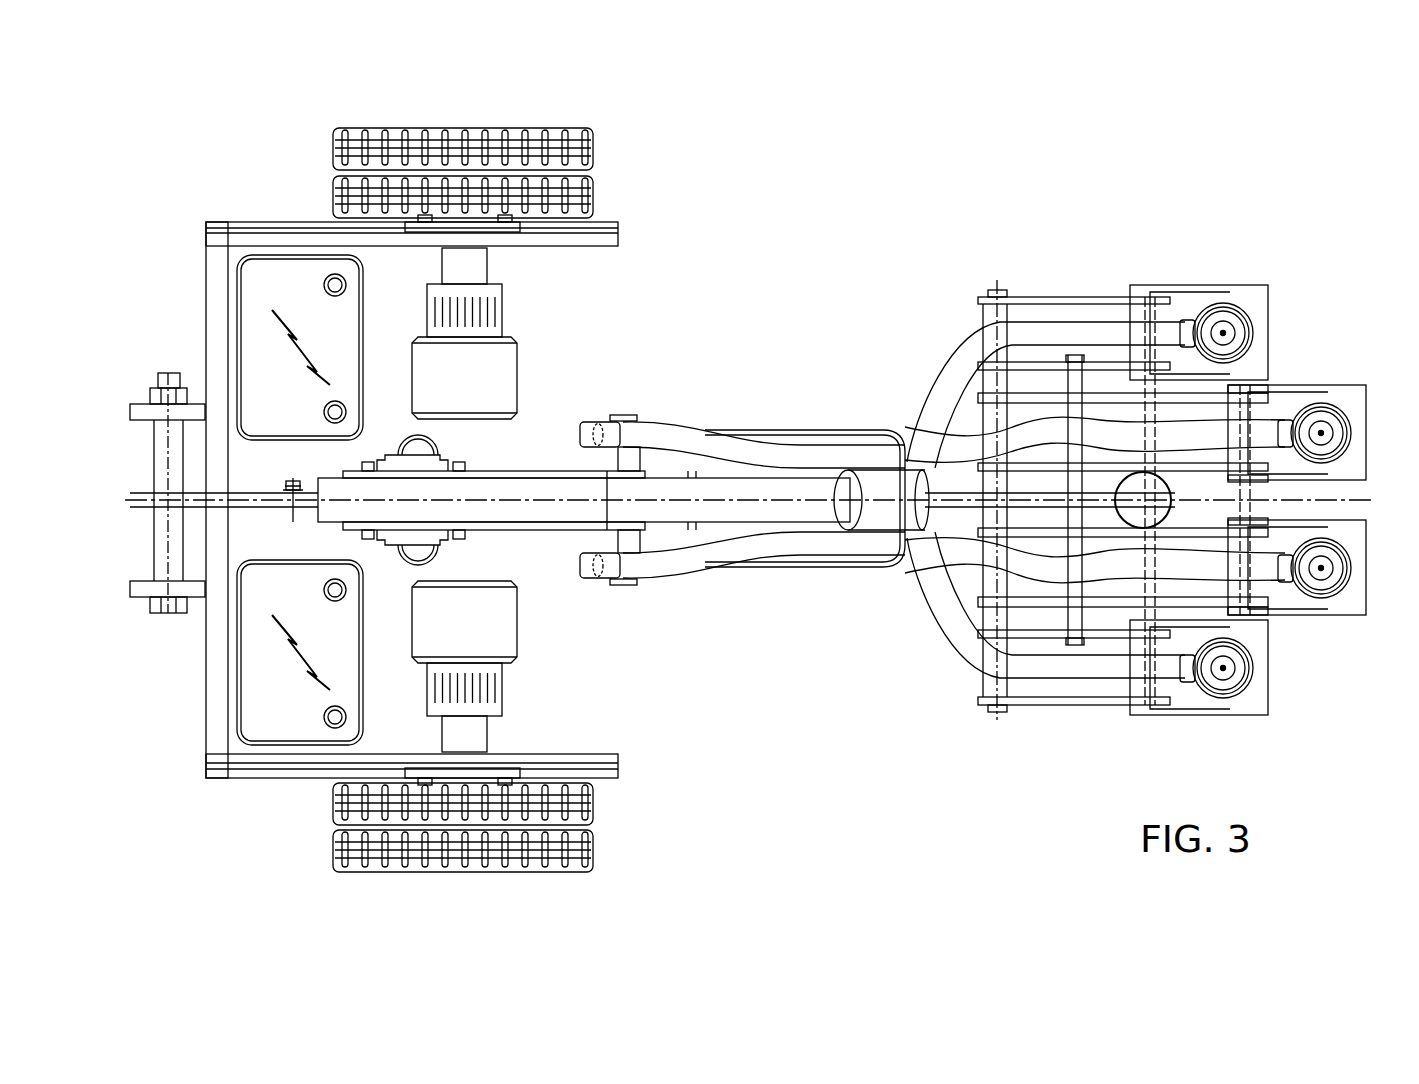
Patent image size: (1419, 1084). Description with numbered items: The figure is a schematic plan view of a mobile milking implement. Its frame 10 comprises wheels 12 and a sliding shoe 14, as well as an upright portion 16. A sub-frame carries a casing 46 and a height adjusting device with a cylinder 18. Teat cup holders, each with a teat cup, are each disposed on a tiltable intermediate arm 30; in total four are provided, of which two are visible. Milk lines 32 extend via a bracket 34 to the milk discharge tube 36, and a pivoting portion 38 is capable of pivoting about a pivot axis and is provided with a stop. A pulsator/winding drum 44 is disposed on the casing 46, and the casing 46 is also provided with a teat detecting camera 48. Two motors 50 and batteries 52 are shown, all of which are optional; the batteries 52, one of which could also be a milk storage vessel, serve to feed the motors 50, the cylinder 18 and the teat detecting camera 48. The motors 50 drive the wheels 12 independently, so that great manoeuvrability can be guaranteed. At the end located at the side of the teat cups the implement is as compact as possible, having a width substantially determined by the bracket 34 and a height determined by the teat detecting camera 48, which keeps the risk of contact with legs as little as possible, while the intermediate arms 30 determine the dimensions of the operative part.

The frame 10 is at (262, 238).
The wheels 12 is at (575, 172).
The sliding shoe 14 is at (1143, 487).
The upright portion 16 is at (160, 548).
The cylinder 18 is at (295, 485).
The tiltable intermediate arm 30 is at (1117, 400).
The milk lines 32 is at (977, 448).
The bracket 34 is at (780, 432).
The milk discharge tube 36 is at (623, 583).
The pivoting portion 38 is at (540, 513).
The pulsator/winding drum 44 is at (410, 462).
The casing 46 is at (525, 483).
The teat detecting camera 48 is at (885, 513).
The motors 50 is at (502, 360).
The batteries 52 is at (285, 347).